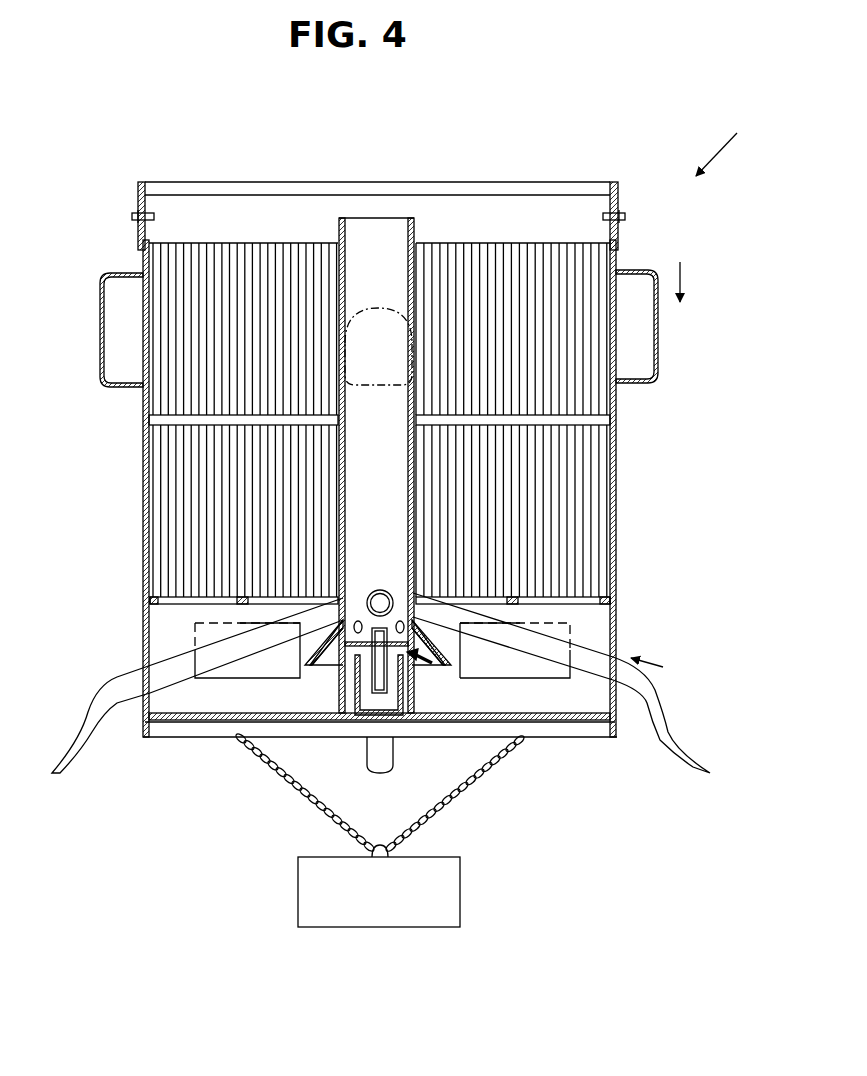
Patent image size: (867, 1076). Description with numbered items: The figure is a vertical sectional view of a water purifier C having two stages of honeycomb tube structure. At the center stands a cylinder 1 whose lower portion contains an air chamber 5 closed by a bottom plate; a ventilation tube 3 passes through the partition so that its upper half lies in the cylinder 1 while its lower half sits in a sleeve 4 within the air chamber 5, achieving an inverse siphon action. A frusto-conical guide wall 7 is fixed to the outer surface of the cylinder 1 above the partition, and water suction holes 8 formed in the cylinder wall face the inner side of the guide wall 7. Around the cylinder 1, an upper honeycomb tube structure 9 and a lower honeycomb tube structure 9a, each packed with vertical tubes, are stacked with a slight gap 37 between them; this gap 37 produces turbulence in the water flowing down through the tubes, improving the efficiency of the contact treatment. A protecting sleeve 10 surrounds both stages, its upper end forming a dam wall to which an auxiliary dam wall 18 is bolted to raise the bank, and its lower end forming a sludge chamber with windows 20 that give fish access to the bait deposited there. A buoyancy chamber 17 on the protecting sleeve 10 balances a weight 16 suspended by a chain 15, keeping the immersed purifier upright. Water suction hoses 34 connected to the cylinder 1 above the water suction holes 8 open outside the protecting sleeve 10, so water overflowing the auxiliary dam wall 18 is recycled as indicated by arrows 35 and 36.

The cylinder 1 is at (383, 228).
The ventilation tube 3 is at (380, 688).
The sleeve 4 is at (360, 630).
The air chamber 5 is at (350, 693).
The frusto-conical guide wall 7 is at (330, 658).
The water suction holes 8 is at (417, 654).
The honeycomb tube structure 9 is at (588, 387).
The honeycomb tube structure 9a is at (593, 500).
The protecting sleeve 10 is at (615, 535).
The chain 15 is at (325, 815).
The weight 16 is at (308, 887).
The buoyancy chamber 17 is at (640, 337).
The auxiliary dam wall 18 is at (620, 195).
The windows 20 is at (533, 670).
The water suction hoses 34 is at (115, 690).
The arrow 35 is at (680, 282).
The arrow 36 is at (648, 660).
The gap 37 is at (602, 422).
The water purifier C is at (757, 137).